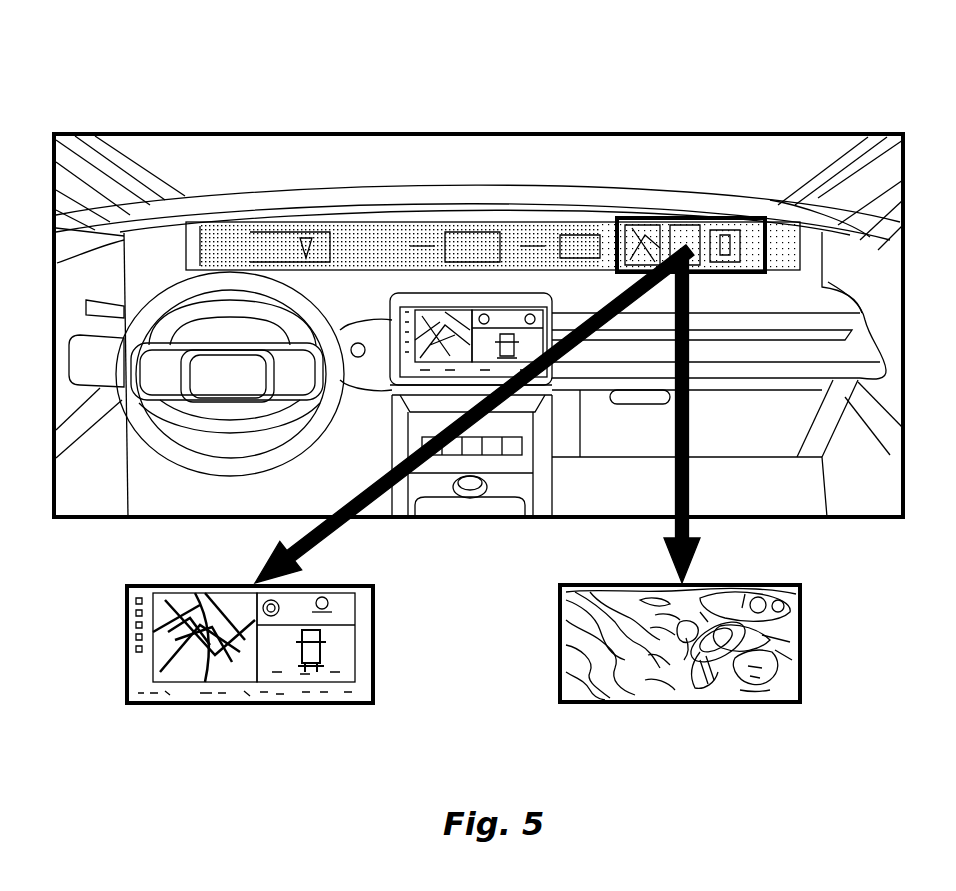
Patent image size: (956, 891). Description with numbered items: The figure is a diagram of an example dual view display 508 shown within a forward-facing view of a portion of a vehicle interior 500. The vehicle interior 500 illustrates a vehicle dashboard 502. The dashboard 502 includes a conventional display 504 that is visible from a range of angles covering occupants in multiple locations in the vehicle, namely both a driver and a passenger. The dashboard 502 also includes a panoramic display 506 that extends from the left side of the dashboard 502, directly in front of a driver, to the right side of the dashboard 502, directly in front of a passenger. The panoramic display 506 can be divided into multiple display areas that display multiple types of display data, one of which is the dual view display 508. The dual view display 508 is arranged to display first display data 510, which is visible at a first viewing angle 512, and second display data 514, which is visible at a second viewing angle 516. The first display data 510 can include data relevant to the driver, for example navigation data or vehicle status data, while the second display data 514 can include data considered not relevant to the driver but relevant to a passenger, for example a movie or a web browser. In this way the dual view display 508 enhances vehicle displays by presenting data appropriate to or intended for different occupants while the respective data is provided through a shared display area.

The vehicle interior 500 is at (110, 132).
The vehicle dashboard 502 is at (247, 205).
The conventional display 504 is at (437, 322).
The panoramic display 506 is at (512, 222).
The dual view display 508 is at (692, 218).
The first display data 510 is at (155, 705).
The first viewing angle 512 is at (336, 520).
The second display data 514 is at (765, 703).
The second viewing angle 516 is at (675, 519).